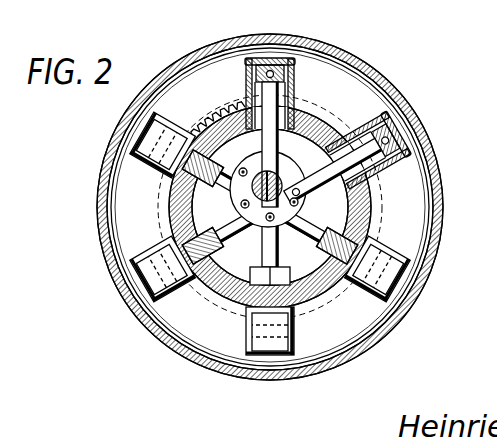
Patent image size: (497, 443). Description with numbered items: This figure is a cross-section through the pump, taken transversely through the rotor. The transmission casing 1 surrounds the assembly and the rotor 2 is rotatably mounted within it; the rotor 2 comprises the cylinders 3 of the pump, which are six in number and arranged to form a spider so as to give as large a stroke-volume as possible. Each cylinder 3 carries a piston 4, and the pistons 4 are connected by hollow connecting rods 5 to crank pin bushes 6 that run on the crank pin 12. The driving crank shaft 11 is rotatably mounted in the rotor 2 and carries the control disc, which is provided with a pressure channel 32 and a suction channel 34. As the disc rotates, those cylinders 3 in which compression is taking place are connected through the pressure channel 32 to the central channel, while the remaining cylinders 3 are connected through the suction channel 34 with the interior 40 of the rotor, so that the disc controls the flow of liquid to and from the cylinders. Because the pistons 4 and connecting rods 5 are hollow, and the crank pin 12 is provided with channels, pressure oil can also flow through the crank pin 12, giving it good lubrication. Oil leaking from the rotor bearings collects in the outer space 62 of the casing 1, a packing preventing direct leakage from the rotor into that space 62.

The transmission casing 1 is at (199, 45).
The rotor 2 is at (337, 117).
The cylinders 3 is at (268, 60).
The pistons 4 is at (292, 72).
The hollow connecting rods 5 is at (293, 118).
The crank pin bushes 6 is at (282, 164).
The driving crank shaft 11 is at (185, 221).
The crank pin 12 is at (290, 226).
The pressure channel 32 is at (305, 192).
The suction channel 34 is at (308, 194).
The interior of the rotor 40 is at (246, 239).
The outer space 62 is at (218, 104).